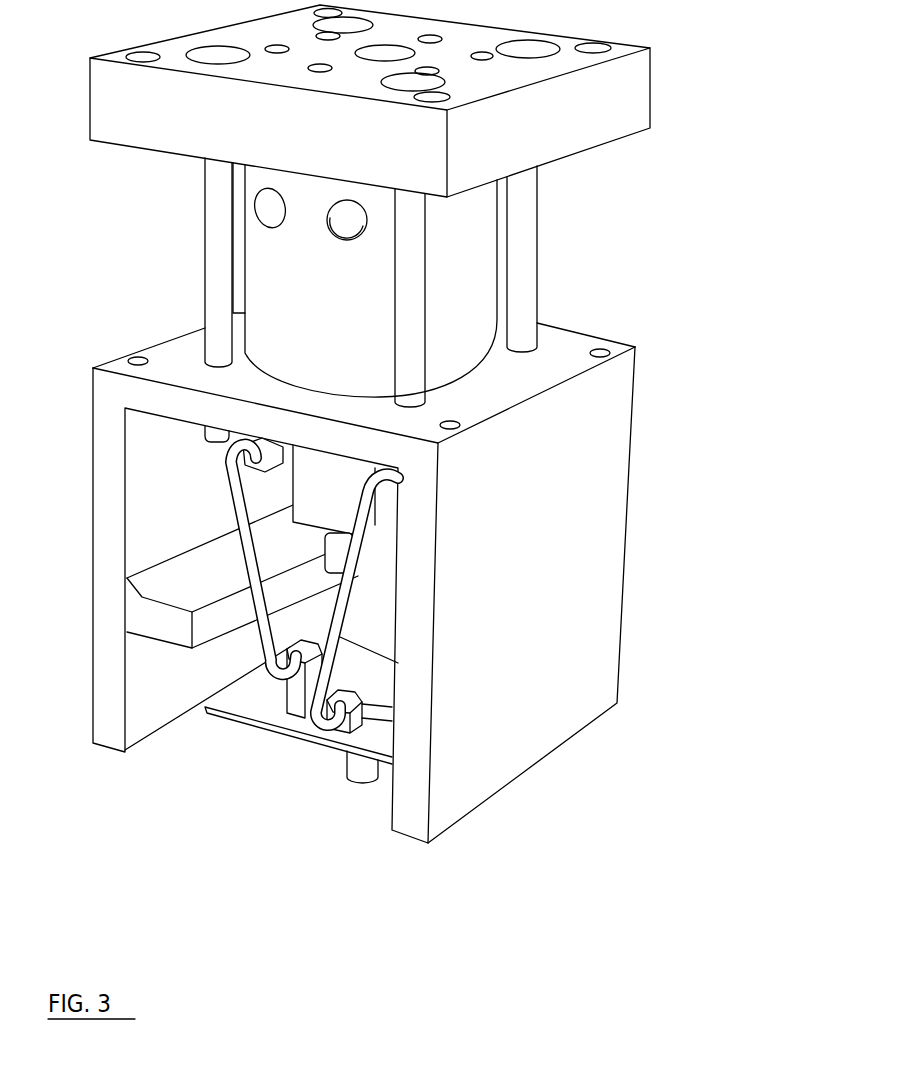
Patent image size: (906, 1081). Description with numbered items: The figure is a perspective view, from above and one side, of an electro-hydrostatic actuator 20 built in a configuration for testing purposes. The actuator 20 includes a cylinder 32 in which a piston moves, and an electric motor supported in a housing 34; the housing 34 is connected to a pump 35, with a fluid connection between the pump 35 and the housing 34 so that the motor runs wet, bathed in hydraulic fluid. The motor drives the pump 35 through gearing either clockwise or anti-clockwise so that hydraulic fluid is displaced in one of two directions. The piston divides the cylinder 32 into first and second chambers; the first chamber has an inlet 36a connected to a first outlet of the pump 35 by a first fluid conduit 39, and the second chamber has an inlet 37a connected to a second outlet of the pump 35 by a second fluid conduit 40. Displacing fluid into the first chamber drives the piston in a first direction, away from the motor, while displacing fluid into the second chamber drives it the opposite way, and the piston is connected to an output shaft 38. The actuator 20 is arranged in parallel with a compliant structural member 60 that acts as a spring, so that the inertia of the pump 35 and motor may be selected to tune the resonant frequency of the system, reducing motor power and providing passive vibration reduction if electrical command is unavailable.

The electro-hydrostatic actuator 20 is at (648, 578).
The cylinder 32 is at (372, 713).
The housing 34 is at (487, 247).
The pump 35 is at (343, 475).
The inlet 36a is at (290, 683).
The inlet 37a is at (393, 742).
The output shaft 38 is at (355, 770).
The first fluid conduit 39 is at (248, 558).
The second fluid conduit 40 is at (357, 553).
The compliant structural member 60 is at (310, 736).